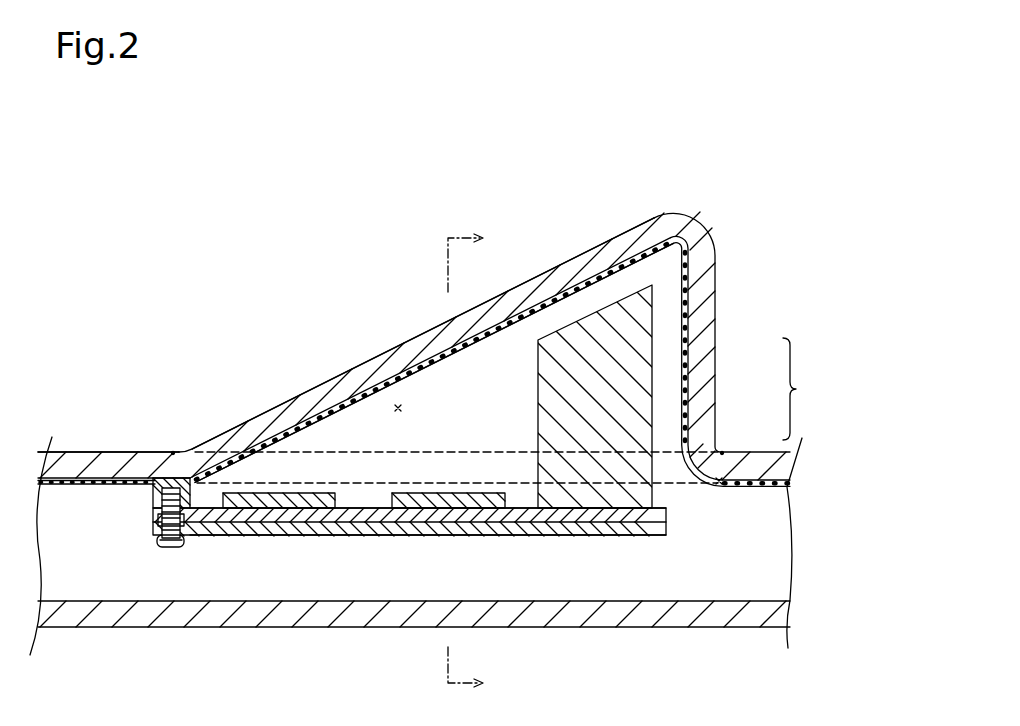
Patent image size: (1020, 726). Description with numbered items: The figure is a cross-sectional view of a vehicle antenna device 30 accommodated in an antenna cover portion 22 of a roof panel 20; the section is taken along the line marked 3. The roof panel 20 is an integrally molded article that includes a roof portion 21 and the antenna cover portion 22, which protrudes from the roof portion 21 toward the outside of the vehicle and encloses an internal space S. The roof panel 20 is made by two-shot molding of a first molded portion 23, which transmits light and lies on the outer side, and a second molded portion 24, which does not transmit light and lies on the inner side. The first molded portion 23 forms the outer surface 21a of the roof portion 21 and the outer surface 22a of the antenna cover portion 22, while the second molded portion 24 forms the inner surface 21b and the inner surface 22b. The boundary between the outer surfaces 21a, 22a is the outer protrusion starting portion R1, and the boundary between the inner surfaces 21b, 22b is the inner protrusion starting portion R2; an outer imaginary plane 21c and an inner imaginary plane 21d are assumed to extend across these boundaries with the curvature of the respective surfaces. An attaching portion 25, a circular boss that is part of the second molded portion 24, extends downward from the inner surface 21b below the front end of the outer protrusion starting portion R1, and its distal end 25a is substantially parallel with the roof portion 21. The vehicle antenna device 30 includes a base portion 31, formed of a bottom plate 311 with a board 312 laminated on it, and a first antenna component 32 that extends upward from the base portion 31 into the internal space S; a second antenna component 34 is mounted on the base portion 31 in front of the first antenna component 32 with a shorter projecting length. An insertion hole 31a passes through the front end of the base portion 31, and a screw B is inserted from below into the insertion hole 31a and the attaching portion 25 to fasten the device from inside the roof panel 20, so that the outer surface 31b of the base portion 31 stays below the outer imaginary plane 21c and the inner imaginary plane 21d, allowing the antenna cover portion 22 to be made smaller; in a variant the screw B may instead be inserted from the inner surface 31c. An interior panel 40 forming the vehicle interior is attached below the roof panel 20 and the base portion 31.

The roof panel 20 is at (781, 186).
The roof portion 21 is at (156, 473).
The outer surface of the roof portion 21a is at (60, 452).
The inner surface of the roof portion 21b is at (60, 484).
The outer imaginary plane 21c is at (271, 455).
The inner imaginary plane 21d is at (205, 490).
The antenna cover portion 22 is at (431, 339).
The outer surface of the antenna cover portion 22a is at (606, 242).
The inner surface of the antenna cover portion 22b is at (573, 293).
The first molded portion 23 is at (722, 346).
The second molded portion 24 is at (686, 291).
The attaching portion 25 is at (155, 494).
The distal end of the attaching portion 25a is at (157, 522).
The vehicle antenna device 30 is at (804, 389).
The base portion 31 is at (466, 505).
The insertion hole 31a is at (163, 543).
The outer surface of the base portion 31b is at (344, 507).
The inner surface of the base portion 31c is at (412, 538).
The bottom plate 311 is at (557, 538).
The board 312 is at (512, 507).
The first antenna component 32 is at (655, 352).
The second antenna component 34 is at (288, 497).
The interior panel 40 is at (322, 628).
The outer protrusion starting portion R1 is at (173, 453).
The inner protrusion starting portion R2 is at (719, 481).
The internal space S is at (398, 408).
The screw B is at (166, 547).
The section line 3 is at (477, 464).